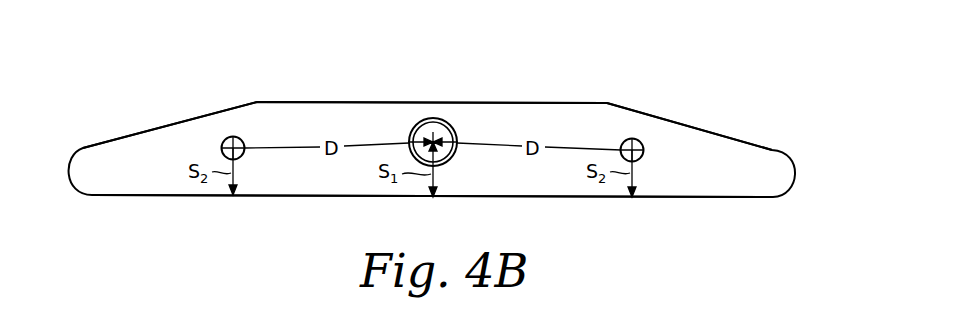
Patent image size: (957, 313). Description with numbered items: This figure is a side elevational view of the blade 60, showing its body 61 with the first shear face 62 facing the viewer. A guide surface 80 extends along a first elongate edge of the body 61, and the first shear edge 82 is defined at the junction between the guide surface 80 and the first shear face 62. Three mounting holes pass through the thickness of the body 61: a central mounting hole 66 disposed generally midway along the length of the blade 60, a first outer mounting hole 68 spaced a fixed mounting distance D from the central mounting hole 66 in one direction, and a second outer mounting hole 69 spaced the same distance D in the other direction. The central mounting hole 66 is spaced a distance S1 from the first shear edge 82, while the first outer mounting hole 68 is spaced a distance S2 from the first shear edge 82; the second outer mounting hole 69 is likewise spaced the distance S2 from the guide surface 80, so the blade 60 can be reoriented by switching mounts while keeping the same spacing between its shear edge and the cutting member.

The blade 60 is at (797, 175).
The body 61 is at (700, 150).
The first shear face 62 is at (509, 145).
The central mounting hole 66 is at (451, 124).
The first outer mounting hole 68 is at (226, 139).
The second outer mounting hole 69 is at (643, 142).
The guide surface 80 is at (158, 198).
The first shear edge 82 is at (550, 198).